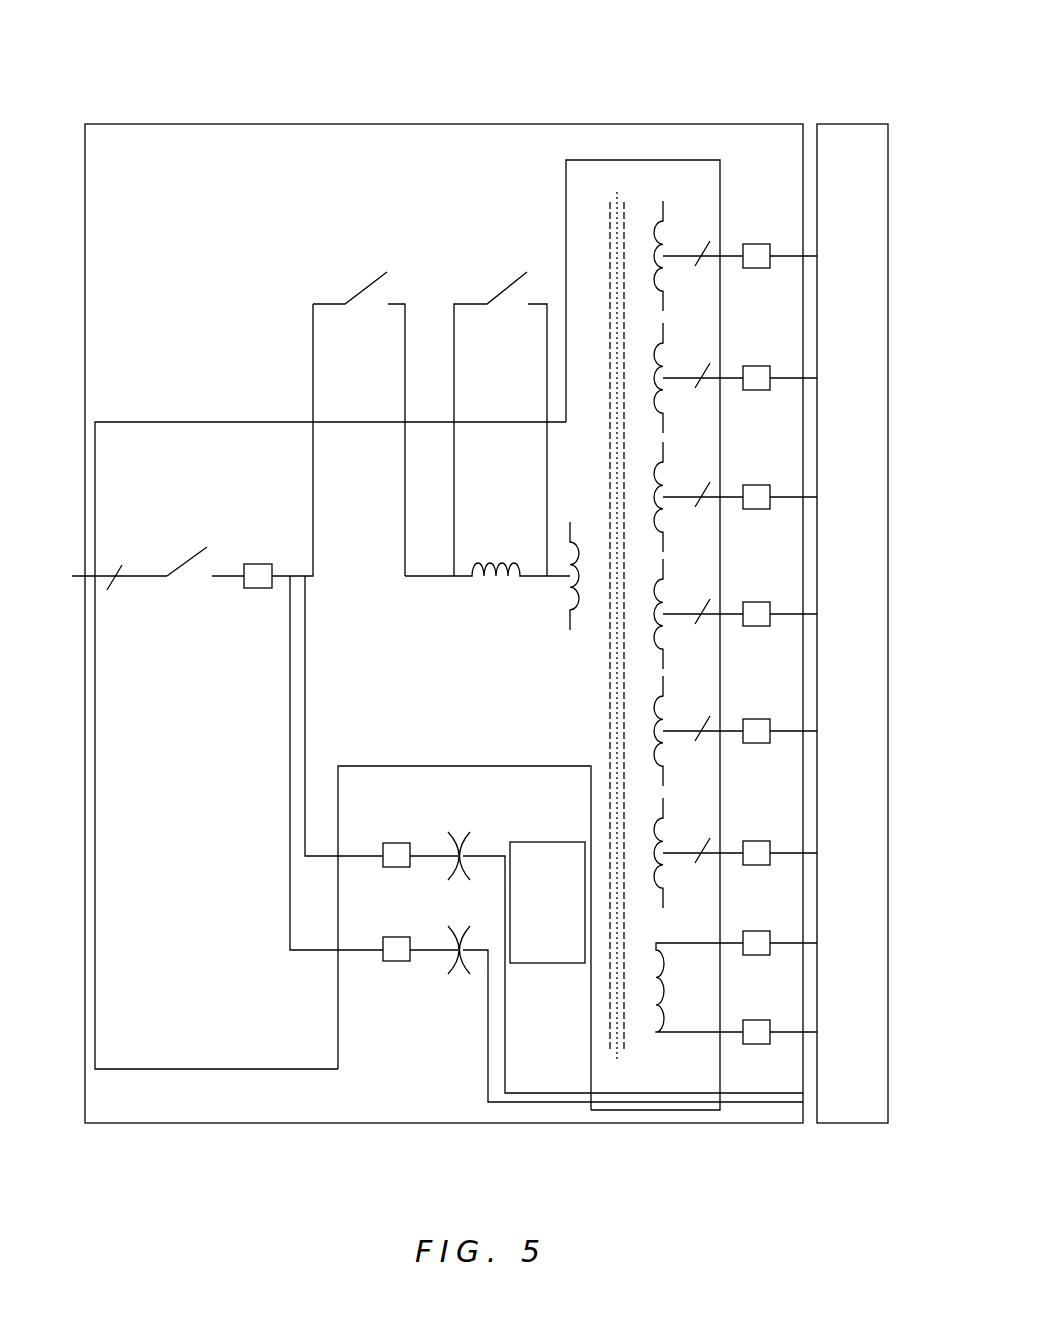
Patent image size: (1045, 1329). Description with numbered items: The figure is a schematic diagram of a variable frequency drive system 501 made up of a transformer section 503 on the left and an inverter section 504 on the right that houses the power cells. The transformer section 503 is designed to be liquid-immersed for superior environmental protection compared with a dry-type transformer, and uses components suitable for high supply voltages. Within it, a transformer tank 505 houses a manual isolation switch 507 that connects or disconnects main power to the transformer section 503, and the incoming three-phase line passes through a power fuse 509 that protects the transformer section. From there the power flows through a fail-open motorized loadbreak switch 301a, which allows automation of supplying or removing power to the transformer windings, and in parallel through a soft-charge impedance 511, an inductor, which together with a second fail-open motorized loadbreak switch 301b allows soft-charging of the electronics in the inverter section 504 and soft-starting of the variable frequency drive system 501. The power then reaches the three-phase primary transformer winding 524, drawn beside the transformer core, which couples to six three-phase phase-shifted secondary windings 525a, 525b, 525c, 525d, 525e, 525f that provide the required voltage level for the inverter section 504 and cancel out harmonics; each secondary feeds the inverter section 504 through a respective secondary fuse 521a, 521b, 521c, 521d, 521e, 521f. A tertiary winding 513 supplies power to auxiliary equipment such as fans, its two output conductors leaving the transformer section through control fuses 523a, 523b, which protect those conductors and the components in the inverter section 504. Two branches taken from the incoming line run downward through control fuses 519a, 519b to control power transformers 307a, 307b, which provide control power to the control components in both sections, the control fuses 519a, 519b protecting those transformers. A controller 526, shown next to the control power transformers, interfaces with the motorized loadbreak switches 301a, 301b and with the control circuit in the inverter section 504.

The variable frequency drive system 501 is at (808, 40).
The transformer section 503 is at (132, 124).
The inverter section 504 is at (835, 124).
The transformer tank 505 is at (144, 421).
The manual isolation switch 507 is at (196, 555).
The power fuse 509 is at (253, 562).
The soft-charge impedance 511 is at (497, 578).
The tertiary winding 513 is at (657, 972).
The control fuse 519a is at (395, 840).
The control fuse 519b is at (383, 955).
The secondary fuse 521a is at (746, 269).
The secondary fuse 521b is at (746, 391).
The secondary fuse 521c is at (746, 510).
The secondary fuse 521d is at (746, 627).
The secondary fuse 521e is at (746, 744).
The secondary fuse 521f is at (746, 866).
The control fuse 523a is at (748, 916).
The control fuse 523b is at (748, 1005).
The primary transformer winding 524 is at (569, 601).
The secondary winding 525a is at (667, 272).
The secondary winding 525b is at (667, 394).
The secondary winding 525c is at (667, 513).
The secondary winding 525d is at (667, 630).
The secondary winding 525e is at (667, 747).
The secondary winding 525f is at (667, 869).
The controller 526 is at (552, 840).
The fail-open motorized loadbreak switch 301a is at (358, 294).
The fail-open motorized loadbreak switch 301b is at (497, 294).
The control power transformer 307a is at (464, 833).
The control power transformer 307b is at (452, 975).